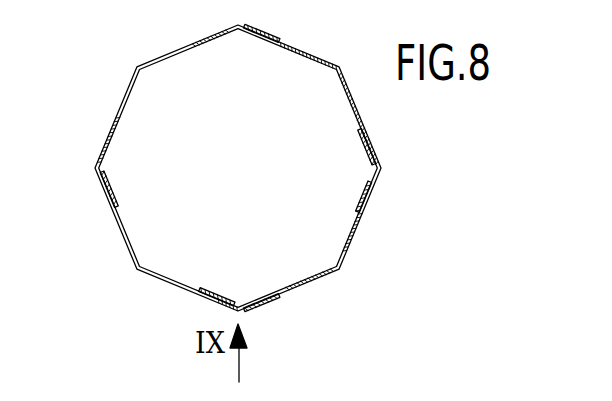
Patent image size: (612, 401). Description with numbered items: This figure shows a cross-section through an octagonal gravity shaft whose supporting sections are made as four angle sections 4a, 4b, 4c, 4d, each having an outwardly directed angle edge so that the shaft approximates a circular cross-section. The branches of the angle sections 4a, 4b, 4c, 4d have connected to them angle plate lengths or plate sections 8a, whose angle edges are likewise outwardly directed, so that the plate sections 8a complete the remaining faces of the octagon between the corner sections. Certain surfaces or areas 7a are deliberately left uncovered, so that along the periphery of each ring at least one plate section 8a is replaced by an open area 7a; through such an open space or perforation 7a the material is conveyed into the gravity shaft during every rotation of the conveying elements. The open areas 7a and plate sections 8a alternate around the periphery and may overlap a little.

The angle section 4a is at (238, 30).
The angle section 4b is at (375, 167).
The angle section 4c is at (236, 306).
The angle section 4d is at (100, 169).
The open surface or area 7a is at (158, 19).
The plate section 8a is at (297, 52).